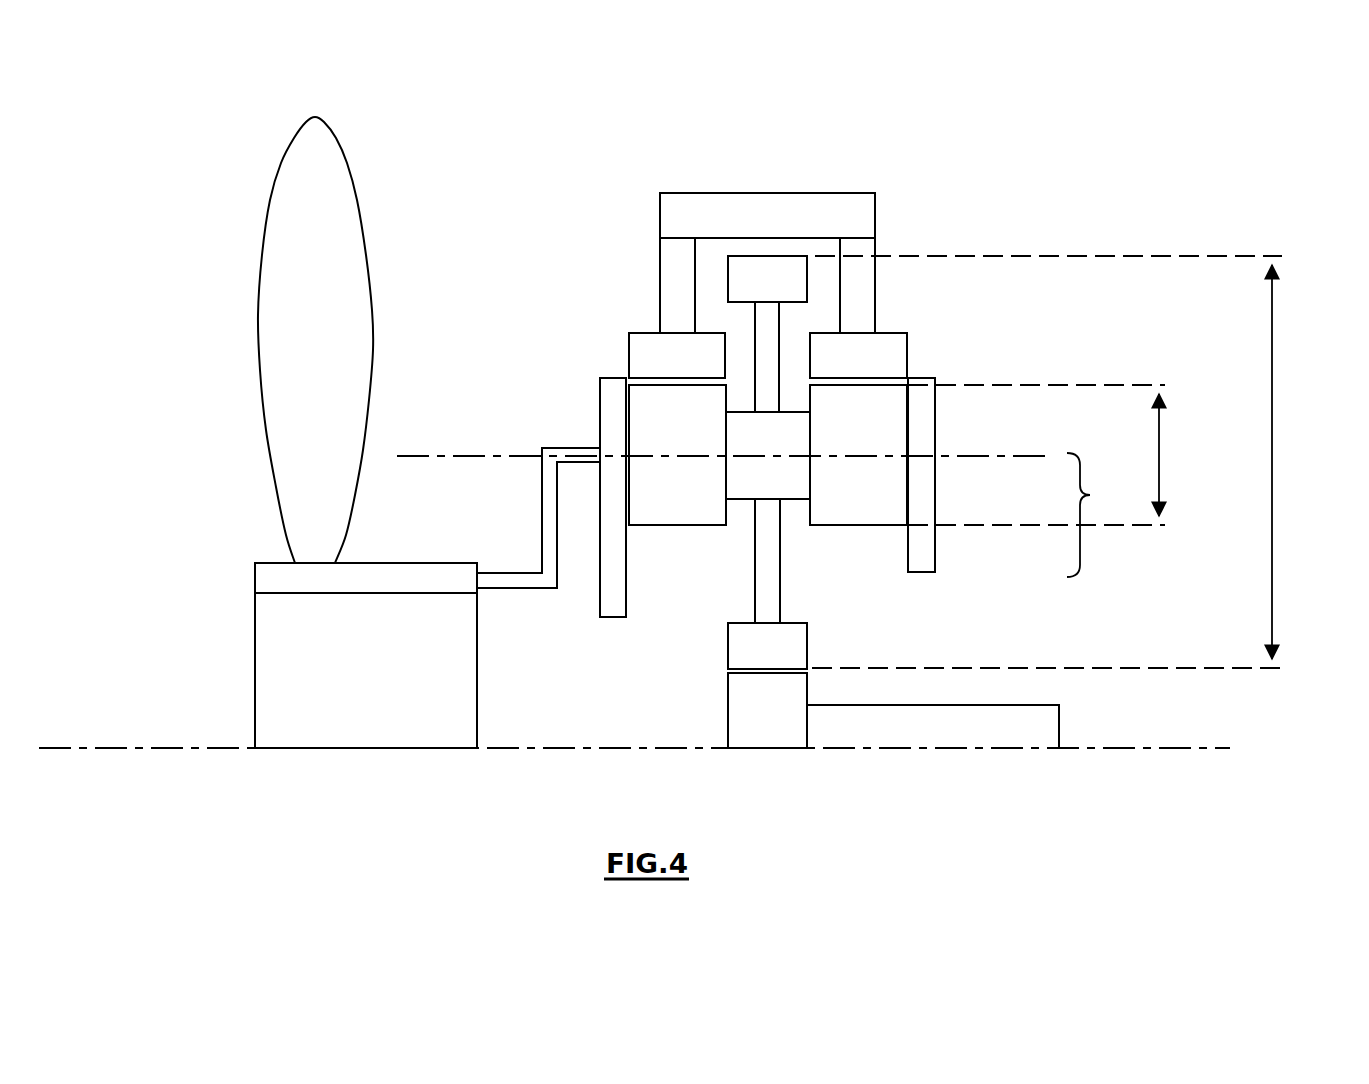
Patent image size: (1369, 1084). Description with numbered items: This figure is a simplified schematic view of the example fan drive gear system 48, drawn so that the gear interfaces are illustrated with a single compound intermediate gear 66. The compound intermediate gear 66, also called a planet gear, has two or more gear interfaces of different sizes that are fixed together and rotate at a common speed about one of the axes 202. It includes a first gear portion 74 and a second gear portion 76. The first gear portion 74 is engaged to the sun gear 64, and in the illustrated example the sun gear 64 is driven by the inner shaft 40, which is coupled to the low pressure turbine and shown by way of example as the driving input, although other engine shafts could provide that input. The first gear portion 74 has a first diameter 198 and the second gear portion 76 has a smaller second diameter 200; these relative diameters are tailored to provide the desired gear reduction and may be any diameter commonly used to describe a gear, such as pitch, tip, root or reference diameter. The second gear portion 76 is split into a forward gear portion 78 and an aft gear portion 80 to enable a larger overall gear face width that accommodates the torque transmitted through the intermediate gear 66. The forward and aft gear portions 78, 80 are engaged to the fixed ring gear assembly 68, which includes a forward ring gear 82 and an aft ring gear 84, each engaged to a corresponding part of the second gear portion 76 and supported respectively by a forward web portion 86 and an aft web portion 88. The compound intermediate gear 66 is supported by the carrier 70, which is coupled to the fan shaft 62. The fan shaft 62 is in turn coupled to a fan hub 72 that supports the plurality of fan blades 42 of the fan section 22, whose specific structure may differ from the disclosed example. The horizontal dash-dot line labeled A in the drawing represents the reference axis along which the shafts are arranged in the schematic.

The fan section 22 is at (164, 385).
The fan blades 42 is at (340, 238).
The fan hub 72 is at (287, 647).
The fan shaft 62 is at (548, 518).
The carrier 70 is at (607, 597).
The axes 202 is at (462, 453).
The gear system 48 is at (985, 182).
The ring gear assembly 68 is at (827, 208).
The forward web portion 86 is at (673, 280).
The aft web portion 88 is at (862, 293).
The forward ring gear 82 is at (637, 353).
The aft ring gear 84 is at (892, 358).
The forward gear portion 78 is at (677, 507).
The aft gear portion 80 is at (878, 488).
The compound intermediate gear 66 is at (912, 426).
The second gear portion 76 is at (1082, 492).
The first gear portion 74 is at (743, 648).
The sun gear 64 is at (743, 716).
The inner shaft 40 is at (1038, 725).
The second diameter 200 is at (1163, 440).
The first diameter 198 is at (1275, 320).
The ground axis A is at (86, 748).